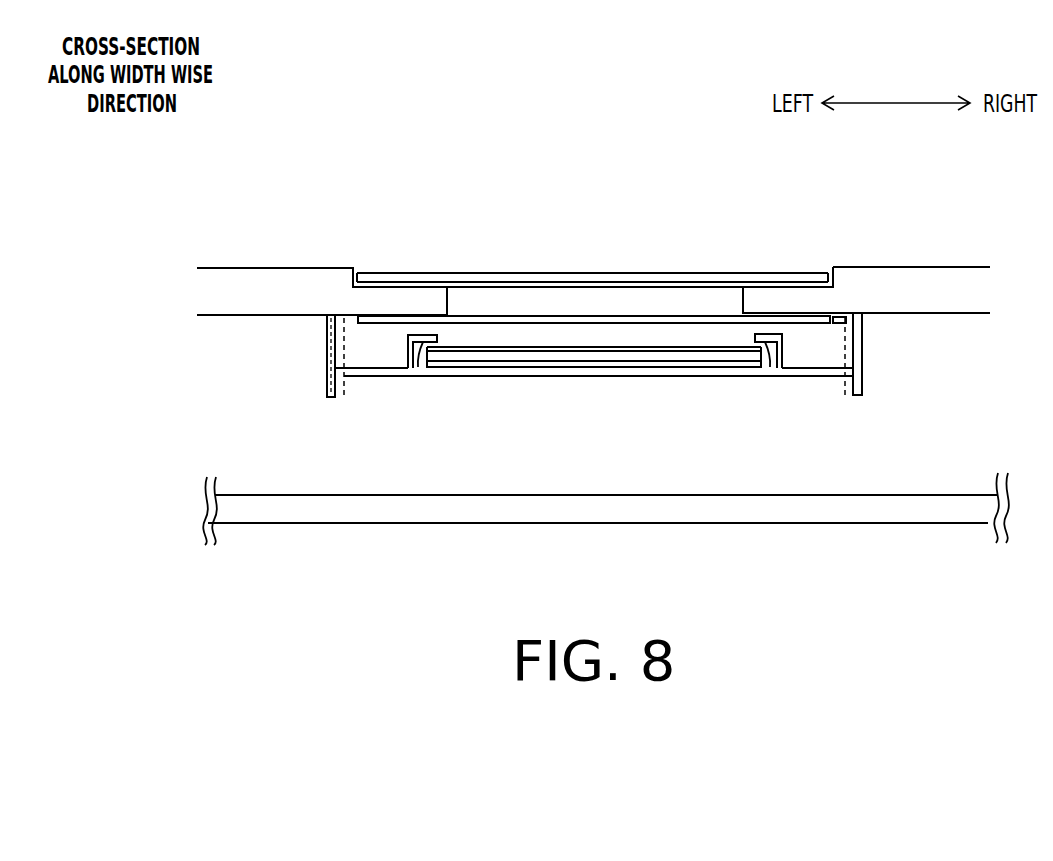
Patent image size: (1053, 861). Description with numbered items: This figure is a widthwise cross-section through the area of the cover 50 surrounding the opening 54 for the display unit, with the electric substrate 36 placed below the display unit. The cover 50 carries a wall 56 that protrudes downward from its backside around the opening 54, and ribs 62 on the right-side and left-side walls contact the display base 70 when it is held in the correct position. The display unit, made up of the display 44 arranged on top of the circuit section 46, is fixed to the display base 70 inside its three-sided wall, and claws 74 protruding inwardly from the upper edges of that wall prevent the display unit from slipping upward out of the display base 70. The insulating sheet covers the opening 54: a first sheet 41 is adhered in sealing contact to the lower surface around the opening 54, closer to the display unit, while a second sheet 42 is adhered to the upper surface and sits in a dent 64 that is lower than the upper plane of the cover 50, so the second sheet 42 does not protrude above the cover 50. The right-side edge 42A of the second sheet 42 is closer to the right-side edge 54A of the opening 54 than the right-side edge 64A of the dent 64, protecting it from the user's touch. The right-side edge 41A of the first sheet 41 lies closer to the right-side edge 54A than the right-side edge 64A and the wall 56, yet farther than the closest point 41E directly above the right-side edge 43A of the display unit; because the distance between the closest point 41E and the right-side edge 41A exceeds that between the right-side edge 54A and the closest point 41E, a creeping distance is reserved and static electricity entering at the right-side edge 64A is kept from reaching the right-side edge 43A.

The electric substrate 36 is at (863, 503).
The first sheet 41 is at (550, 323).
The right-side edge of the first sheet 41A is at (866, 325).
The closest point 41E is at (766, 312).
The second sheet 42 is at (618, 277).
The right-side edge of the second sheet 42A is at (830, 262).
The right-side edge of the display unit 43A is at (770, 343).
The display 44 is at (643, 347).
The circuit section 46 is at (598, 363).
The cover 50 is at (218, 290).
The opening 54 is at (527, 297).
The right-side edge of the opening 54A is at (738, 298).
The wall 56 is at (327, 368).
The ribs 62 is at (344, 397).
The dent 64 is at (443, 265).
The right-side edge of the dent 64A is at (833, 262).
The display base 70 is at (363, 377).
The claws 74 is at (413, 369).